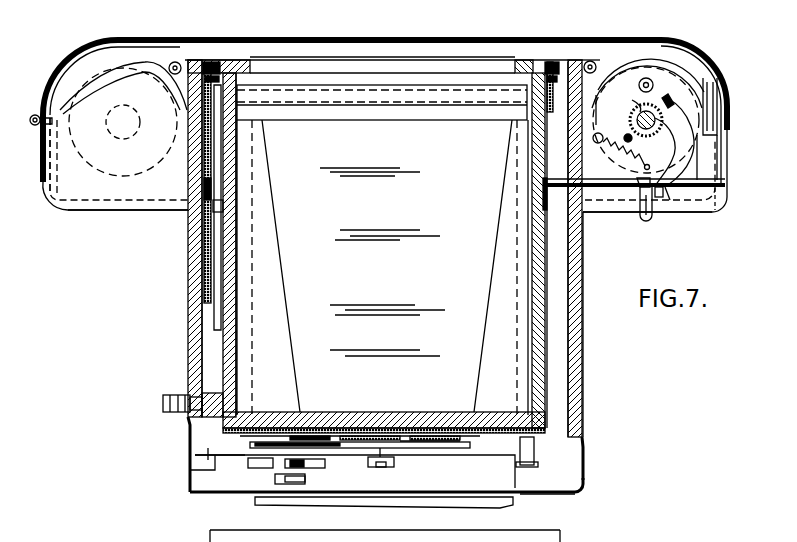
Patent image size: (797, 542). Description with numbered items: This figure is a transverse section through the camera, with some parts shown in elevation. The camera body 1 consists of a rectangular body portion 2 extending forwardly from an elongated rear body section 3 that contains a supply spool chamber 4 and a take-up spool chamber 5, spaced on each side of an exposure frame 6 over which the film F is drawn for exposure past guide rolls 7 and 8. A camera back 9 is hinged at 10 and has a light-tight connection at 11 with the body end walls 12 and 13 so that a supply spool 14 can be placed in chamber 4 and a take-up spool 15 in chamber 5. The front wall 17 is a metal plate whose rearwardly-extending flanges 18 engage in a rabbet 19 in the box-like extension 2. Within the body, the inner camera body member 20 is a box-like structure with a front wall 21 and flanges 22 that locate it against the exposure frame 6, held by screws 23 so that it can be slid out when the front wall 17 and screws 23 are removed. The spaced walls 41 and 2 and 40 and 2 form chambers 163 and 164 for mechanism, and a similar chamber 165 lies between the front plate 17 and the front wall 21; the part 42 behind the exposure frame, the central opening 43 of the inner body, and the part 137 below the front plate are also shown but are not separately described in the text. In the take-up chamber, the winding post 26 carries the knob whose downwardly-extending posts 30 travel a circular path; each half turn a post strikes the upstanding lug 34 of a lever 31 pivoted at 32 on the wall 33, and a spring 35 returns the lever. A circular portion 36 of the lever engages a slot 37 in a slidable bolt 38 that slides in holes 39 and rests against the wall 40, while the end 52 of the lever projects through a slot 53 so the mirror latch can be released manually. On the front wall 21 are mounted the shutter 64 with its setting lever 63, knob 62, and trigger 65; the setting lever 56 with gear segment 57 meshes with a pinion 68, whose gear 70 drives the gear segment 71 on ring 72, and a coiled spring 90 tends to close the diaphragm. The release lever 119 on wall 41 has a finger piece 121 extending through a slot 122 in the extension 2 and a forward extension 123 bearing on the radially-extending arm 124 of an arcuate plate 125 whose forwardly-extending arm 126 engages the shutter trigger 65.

The camera body 1 is at (584, 214).
The rectangular body portion 2 is at (188, 294).
The elongated rear body section 3 is at (82, 213).
The supply spool chamber 4 is at (43, 174).
The take-up spool chamber 5 is at (693, 152).
The exposure frame 6 is at (432, 60).
The guide roll 7 is at (170, 66).
The guide roll 8 is at (586, 62).
The camera back 9 is at (361, 40).
The hinge 10 is at (33, 116).
The light-tight connection 11 is at (722, 102).
The camera body end wall 12 is at (44, 198).
The camera body end wall 13 is at (720, 209).
The supply spool 14 is at (127, 106).
The take-up spool 15 is at (632, 100).
The front wall 17 is at (548, 497).
The rearwardly-extending flanges 18 is at (585, 464).
The rabbet 19 is at (189, 431).
The inner camera body member 20 is at (548, 351).
The front wall of inner body member 21 is at (490, 412).
The flanges 22 is at (214, 64).
The screws 23 is at (212, 72).
The post 26 is at (630, 114).
The downwardly-extending posts 30 is at (626, 137).
The lever 31 is at (712, 137).
The pivot 32 is at (652, 82).
The wall 33 is at (634, 62).
The upstanding lug 34 is at (676, 98).
The spring 35 is at (615, 153).
The circular portion 36 is at (641, 215).
The slot 37 is at (670, 201).
The slidable bolt 38 is at (727, 187).
The holes 39 is at (550, 207).
The wall of inner body member 40 is at (530, 279).
The inner camera body wall 41 is at (236, 268).
The roller 42 is at (474, 107).
The window 43 is at (382, 267).
The end of lever 52 is at (646, 219).
The slot 53 is at (659, 199).
The lever 56 is at (258, 432).
The gear segment 57 is at (303, 428).
The knob of shutter-setting lever 62 is at (312, 470).
The shutter-setting lever 63 is at (382, 468).
The shutter 64 is at (355, 471).
The shutter trigger 65 is at (290, 484).
The pinion 68 is at (340, 434).
The gear 70 is at (366, 436).
The gear segment 71 is at (382, 438).
The ring 72 is at (478, 444).
The coiled spring 90 is at (520, 466).
The release lever 119 is at (222, 340).
The operating finger piece 121 is at (163, 403).
The slot 122 is at (210, 395).
The forward extension 123 is at (212, 463).
The radially-extending arm 124 is at (195, 459).
The arcuate plate 125 is at (255, 469).
The forwardly-extending arm 126 is at (306, 482).
The bottom cover 137 is at (500, 507).
The chamber 163 is at (205, 322).
The chamber 164 is at (560, 327).
The mechanism chamber 165 is at (585, 490).
The film F is at (605, 60).